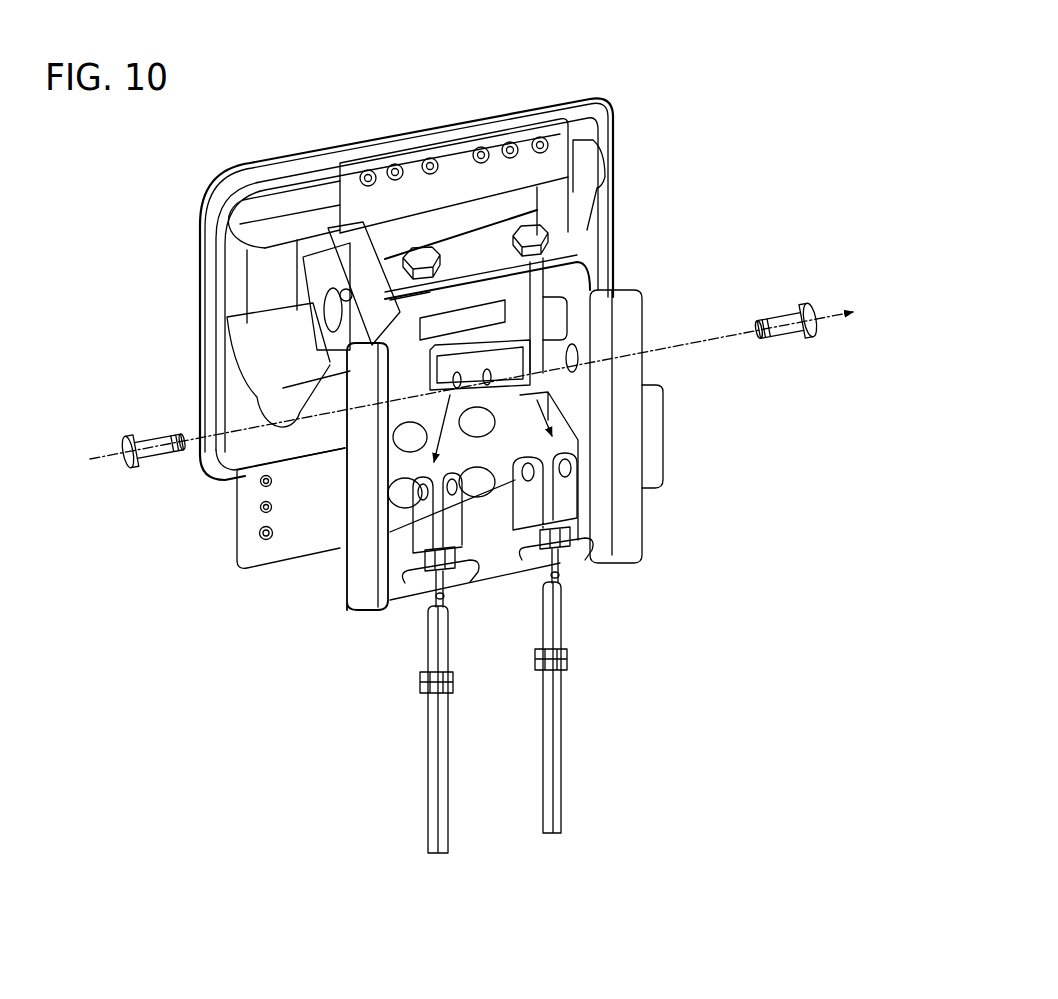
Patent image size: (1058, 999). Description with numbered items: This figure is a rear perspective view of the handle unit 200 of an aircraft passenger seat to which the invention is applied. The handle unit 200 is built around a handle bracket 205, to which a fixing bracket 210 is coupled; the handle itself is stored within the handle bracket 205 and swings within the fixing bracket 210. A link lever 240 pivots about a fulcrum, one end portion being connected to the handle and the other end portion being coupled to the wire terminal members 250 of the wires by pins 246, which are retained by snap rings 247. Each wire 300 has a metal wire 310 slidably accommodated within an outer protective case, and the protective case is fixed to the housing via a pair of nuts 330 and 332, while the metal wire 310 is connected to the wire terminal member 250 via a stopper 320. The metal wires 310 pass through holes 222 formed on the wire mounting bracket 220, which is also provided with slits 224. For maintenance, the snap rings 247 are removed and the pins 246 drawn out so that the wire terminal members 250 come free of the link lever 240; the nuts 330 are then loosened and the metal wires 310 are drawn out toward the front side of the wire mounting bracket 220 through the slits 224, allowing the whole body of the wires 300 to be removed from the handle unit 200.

The handle unit 200 is at (665, 89).
The handle bracket 205 is at (290, 175).
The fixing bracket 210 is at (624, 303).
The wire mounting bracket 220 is at (490, 553).
The holes 222 is at (413, 595).
The slits 224 is at (417, 578).
The link lever 240 is at (585, 235).
The pins 246 is at (152, 436).
The snap rings 247 is at (503, 392).
The wire terminal members 250 is at (258, 535).
The wires 300 is at (440, 817).
The metal wire 310 is at (453, 588).
The stopper 320 is at (413, 540).
The nut 330 is at (413, 563).
The nut 332 is at (430, 697).